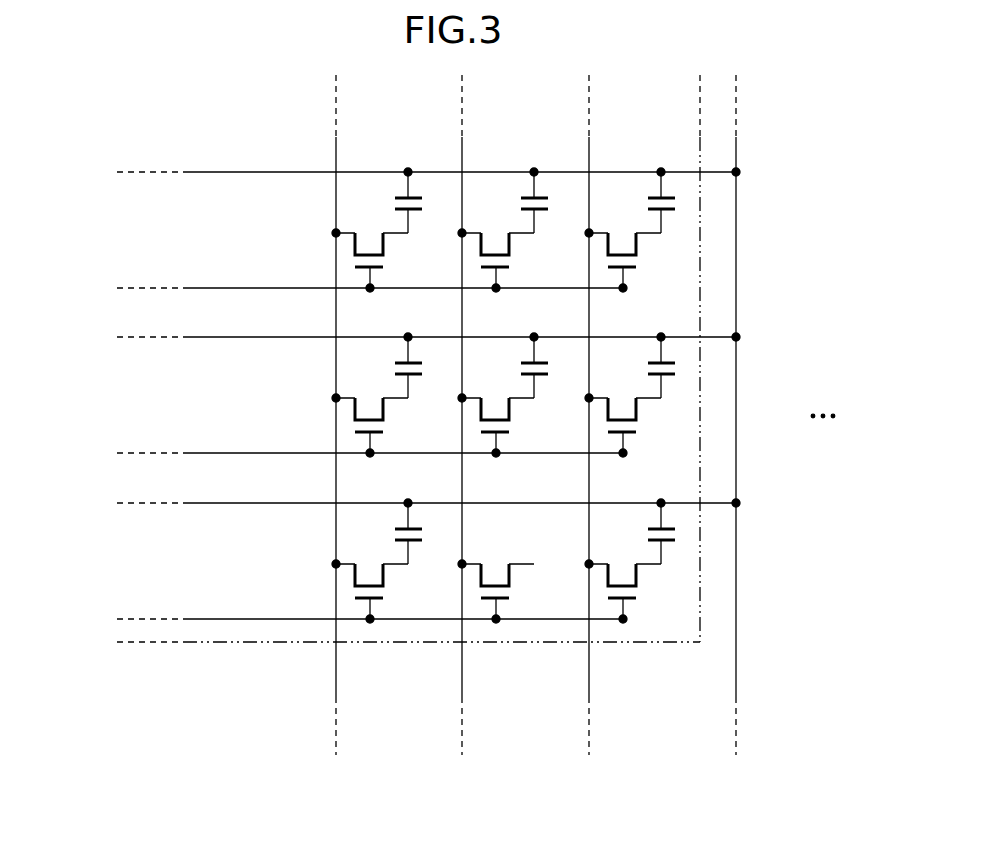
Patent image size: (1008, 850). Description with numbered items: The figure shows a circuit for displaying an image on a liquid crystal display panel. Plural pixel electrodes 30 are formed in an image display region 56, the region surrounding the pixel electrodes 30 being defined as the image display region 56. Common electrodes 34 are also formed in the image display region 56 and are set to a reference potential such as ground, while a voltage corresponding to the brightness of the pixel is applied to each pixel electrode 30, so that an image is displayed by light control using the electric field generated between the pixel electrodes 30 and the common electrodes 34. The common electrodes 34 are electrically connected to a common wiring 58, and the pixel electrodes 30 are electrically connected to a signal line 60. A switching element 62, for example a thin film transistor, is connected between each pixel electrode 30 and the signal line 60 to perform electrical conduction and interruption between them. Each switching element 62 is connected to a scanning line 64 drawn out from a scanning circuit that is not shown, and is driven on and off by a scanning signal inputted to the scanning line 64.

The pixel electrode 30 is at (675, 532).
The common electrode 34 is at (207, 172).
The image display region 56 is at (513, 643).
The common wiring 58 is at (736, 672).
The signal line 60 is at (336, 678).
The switching element 62 is at (642, 609).
The scanning line 64 is at (257, 288).